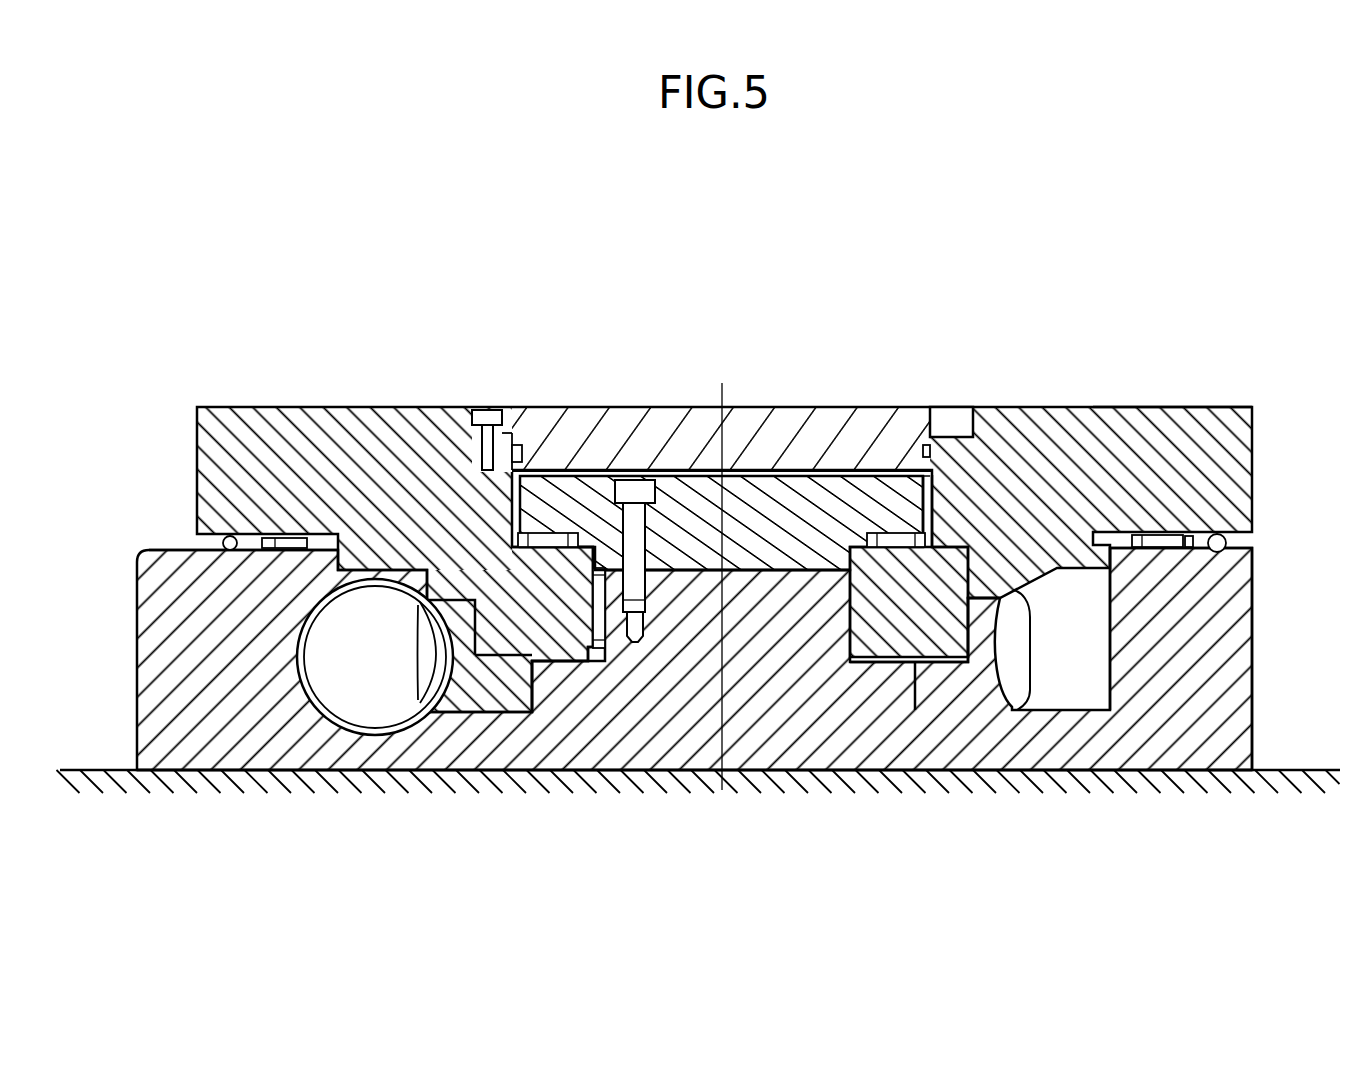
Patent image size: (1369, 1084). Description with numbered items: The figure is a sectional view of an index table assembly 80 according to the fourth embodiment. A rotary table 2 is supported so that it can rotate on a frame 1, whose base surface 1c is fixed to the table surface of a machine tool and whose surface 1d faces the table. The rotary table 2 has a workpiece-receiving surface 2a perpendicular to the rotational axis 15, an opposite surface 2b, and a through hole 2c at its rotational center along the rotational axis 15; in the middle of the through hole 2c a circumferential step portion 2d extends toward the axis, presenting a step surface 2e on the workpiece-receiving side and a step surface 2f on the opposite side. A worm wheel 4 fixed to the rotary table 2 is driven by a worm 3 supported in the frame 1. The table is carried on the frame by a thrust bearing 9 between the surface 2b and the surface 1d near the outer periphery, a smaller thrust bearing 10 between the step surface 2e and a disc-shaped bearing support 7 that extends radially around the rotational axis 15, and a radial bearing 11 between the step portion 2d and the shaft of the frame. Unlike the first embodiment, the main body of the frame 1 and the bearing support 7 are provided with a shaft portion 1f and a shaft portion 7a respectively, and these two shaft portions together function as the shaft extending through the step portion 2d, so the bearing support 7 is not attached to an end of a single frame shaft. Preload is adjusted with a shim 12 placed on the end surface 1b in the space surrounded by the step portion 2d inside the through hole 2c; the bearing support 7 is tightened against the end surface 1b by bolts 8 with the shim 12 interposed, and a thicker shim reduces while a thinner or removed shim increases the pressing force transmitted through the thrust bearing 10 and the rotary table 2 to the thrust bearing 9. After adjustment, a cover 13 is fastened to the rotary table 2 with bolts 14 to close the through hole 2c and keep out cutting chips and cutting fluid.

The frame 1 is at (180, 580).
The end surface 1b is at (770, 567).
The base surface 1c is at (385, 775).
The surface 1d is at (318, 547).
The shaft portion 1f is at (793, 607).
The rotary table 2 is at (277, 433).
The workpiece-receiving surface 2a is at (1090, 420).
The surface 2b is at (1150, 440).
The through hole 2c is at (565, 407).
The step portion 2d is at (567, 590).
The step surface 2e is at (907, 523).
The step surface 2f is at (597, 657).
The worm 3 is at (335, 675).
The worm wheel 4 is at (462, 628).
The bearing support 7 is at (888, 493).
The shaft portion 7a is at (840, 568).
The bolts 8 is at (640, 477).
The thrust bearing 9 is at (1160, 530).
The thrust bearing 10 is at (852, 510).
The radial bearing 11 is at (828, 650).
The shim 12 is at (672, 470).
The cover 13 is at (920, 425).
The bolts 14 is at (481, 418).
The rotational axis 15 is at (727, 680).
The index table assembly 80 is at (768, 226).